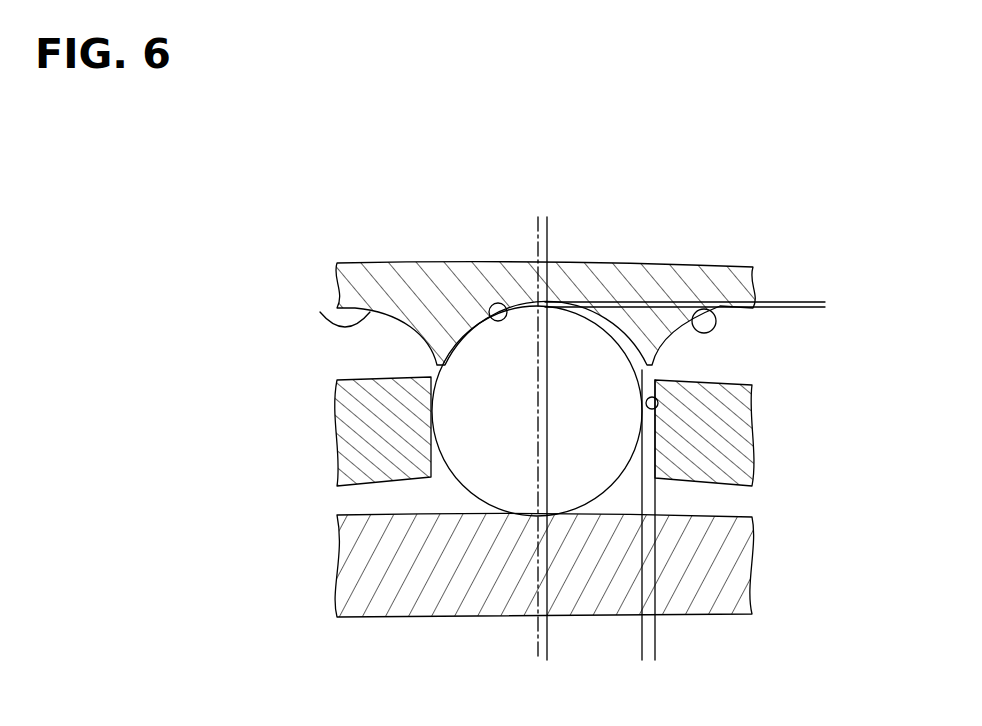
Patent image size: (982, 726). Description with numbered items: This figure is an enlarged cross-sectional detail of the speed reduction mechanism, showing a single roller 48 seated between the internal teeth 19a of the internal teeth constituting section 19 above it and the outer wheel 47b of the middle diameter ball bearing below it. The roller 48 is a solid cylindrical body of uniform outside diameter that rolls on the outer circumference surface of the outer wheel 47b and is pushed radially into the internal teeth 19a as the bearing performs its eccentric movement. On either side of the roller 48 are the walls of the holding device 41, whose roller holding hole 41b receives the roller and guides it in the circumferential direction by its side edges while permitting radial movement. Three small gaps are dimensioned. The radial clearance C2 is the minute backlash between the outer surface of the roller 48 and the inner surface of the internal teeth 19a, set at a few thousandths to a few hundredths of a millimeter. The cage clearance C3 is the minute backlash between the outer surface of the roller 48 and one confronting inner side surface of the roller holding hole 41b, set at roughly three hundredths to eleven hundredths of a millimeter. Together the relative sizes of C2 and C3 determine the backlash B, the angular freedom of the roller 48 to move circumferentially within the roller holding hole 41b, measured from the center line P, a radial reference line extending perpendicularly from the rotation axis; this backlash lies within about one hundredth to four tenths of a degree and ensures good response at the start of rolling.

The internal teeth constituting section 19 is at (405, 262).
The internal teeth 19a is at (497, 303).
The holding device 41 is at (347, 410).
The roller holding hole 41b is at (658, 402).
The roller 48 is at (497, 450).
The outer wheel 47b is at (743, 583).
The backlash B is at (512, 233).
The radial clearance C2 is at (806, 350).
The cage clearance C3 is at (618, 642).
The center line P is at (538, 633).